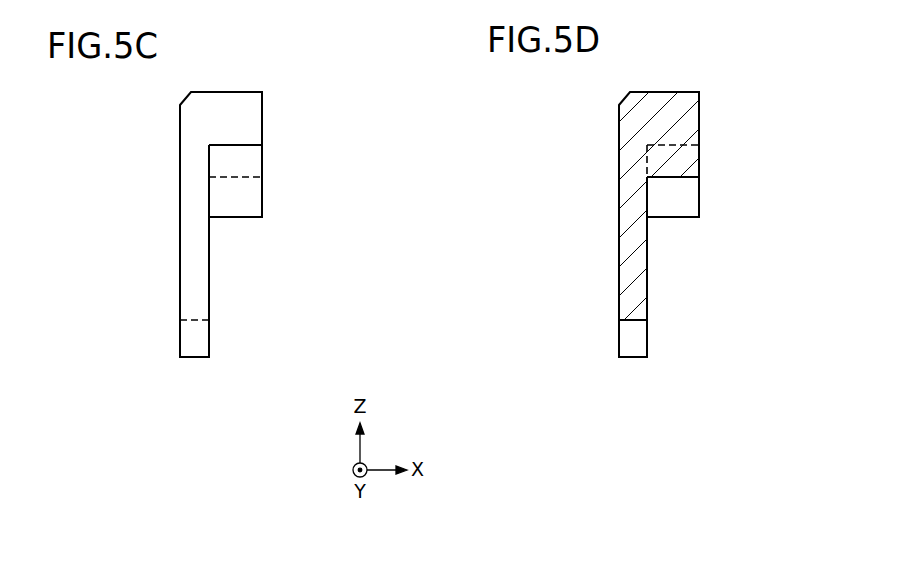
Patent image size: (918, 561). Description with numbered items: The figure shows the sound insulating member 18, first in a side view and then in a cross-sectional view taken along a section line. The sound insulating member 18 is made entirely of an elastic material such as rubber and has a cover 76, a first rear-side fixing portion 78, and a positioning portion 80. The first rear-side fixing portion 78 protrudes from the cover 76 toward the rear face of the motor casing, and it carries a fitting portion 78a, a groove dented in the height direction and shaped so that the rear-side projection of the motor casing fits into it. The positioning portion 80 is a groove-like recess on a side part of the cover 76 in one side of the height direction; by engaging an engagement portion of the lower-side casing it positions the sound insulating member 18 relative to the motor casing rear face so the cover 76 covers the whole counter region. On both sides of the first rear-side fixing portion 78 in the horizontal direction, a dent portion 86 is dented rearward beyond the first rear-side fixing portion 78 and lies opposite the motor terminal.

In FIG. 5C, the sound insulating member 18 is at (171, 282).
In FIG. 5D, the sound insulating member 18 is at (611, 282).
In FIG. 5C, the cover 76 is at (180, 229).
In FIG. 5D, the cover 76 is at (619, 231).
In FIG. 5C, the first rear-side fixing portion 78 is at (238, 162).
In FIG. 5D, the first rear-side fixing portion 78 is at (677, 162).
In FIG. 5C, the fitting portion 78a is at (235, 177).
In FIG. 5D, the fitting portion 78a is at (674, 178).
In FIG. 5C, the positioning portion 80 is at (197, 321).
In FIG. 5D, the positioning portion 80 is at (632, 320).
In FIG. 5C, the dent portion 86 is at (219, 200).